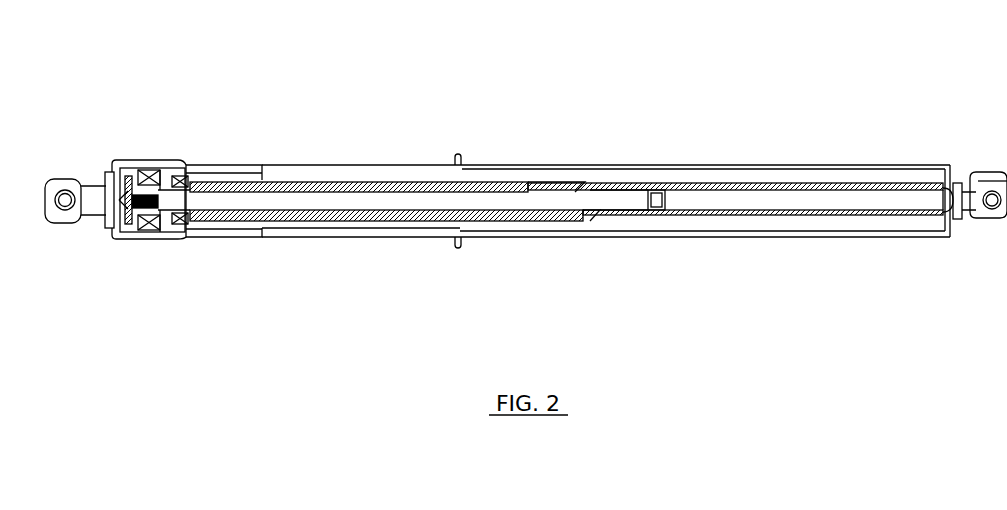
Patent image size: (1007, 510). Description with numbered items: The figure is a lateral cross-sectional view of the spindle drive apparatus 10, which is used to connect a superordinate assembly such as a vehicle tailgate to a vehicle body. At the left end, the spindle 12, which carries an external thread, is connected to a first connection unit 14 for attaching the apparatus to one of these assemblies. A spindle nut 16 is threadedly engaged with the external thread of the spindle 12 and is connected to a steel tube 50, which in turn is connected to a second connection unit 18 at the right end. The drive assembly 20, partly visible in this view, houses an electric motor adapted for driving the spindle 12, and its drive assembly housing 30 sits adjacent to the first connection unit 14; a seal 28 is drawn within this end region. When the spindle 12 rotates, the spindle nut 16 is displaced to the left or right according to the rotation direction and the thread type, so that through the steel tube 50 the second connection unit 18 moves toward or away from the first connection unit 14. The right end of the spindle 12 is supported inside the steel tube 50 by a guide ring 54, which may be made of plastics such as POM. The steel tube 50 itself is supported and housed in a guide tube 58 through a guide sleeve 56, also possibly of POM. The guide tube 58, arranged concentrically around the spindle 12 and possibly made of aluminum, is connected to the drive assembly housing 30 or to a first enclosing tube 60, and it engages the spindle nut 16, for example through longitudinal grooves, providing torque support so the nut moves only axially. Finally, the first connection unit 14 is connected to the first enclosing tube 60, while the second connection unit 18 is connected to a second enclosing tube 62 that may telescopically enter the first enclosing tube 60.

The spindle drive apparatus 10 is at (880, 68).
The spindle 12 is at (617, 197).
The first connection unit 14 is at (67, 172).
The spindle nut 16 is at (518, 175).
The second connection unit 18 is at (987, 172).
The drive assembly 20 is at (146, 141).
The seal 28 is at (163, 225).
The drive assembly housing 30 is at (229, 170).
The steel tube 50 is at (743, 185).
The guide ring 54 is at (656, 190).
The guide sleeve 56 is at (577, 183).
The guide tube 58 is at (422, 169).
The first enclosing tube 60 is at (353, 165).
The second enclosing tube 62 is at (778, 236).